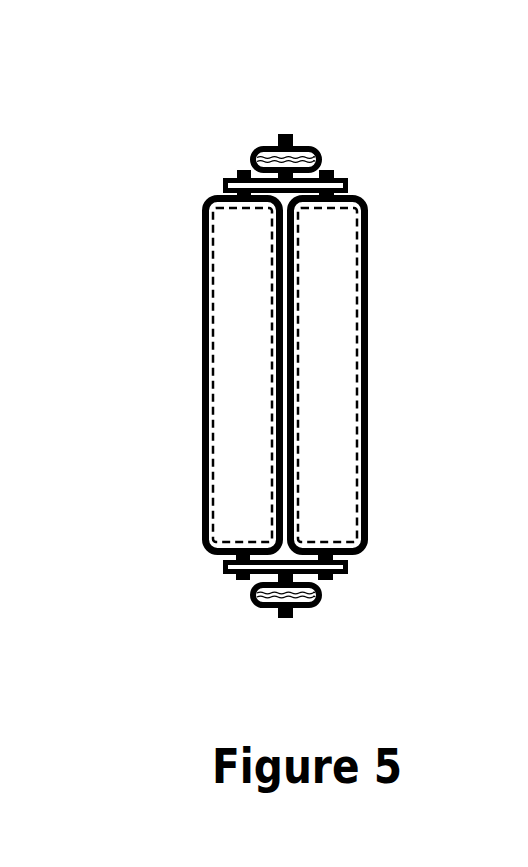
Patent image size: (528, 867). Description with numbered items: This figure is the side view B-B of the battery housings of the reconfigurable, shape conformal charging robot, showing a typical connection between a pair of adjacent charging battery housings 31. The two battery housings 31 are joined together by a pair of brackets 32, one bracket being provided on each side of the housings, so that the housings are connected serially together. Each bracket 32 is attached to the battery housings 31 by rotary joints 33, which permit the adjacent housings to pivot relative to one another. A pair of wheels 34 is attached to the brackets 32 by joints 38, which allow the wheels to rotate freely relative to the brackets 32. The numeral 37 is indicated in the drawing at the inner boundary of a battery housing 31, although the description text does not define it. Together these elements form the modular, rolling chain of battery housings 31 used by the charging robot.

The battery housing 31 is at (323, 300).
The bracket 32 is at (353, 181).
The rotary joint 33 is at (337, 168).
The wheel 34 is at (307, 142).
The inner cell boundary 37 is at (339, 438).
The joint 38 is at (278, 137).